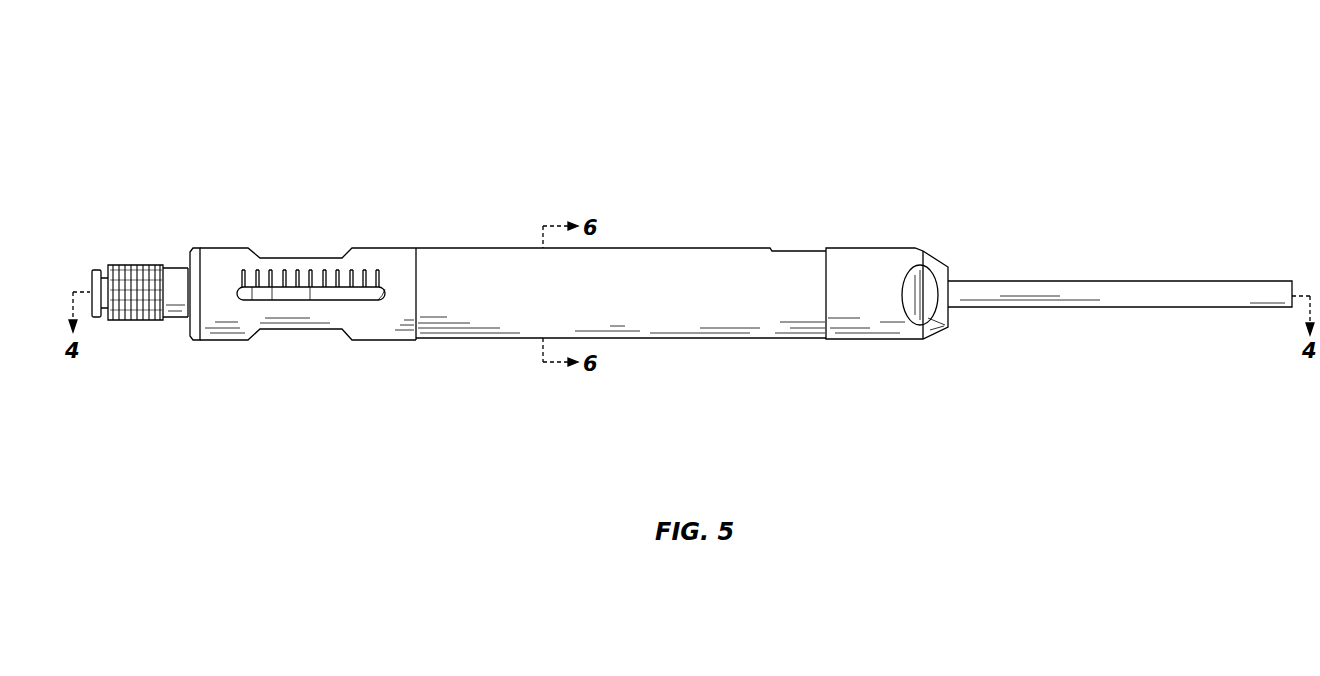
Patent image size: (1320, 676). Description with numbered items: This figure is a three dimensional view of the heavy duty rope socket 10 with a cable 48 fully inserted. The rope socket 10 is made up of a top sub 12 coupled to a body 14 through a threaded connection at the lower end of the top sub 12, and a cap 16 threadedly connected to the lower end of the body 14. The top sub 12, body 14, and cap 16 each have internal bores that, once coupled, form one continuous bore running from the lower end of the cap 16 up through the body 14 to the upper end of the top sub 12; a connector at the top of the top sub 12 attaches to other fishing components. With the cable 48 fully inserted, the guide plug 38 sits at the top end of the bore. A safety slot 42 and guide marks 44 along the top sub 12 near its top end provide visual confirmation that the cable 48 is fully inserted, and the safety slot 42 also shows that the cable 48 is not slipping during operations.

The rope socket 10 is at (193, 98).
The top sub 12 is at (222, 248).
The body 14 is at (490, 248).
The cap 16 is at (862, 248).
The guide plug 38 is at (290, 298).
The safety slot 42 is at (388, 294).
The guide marks 44 is at (313, 281).
The cable 48 is at (1078, 281).